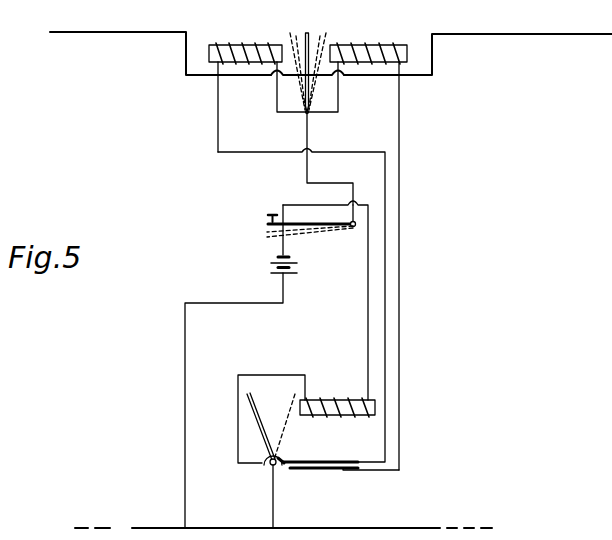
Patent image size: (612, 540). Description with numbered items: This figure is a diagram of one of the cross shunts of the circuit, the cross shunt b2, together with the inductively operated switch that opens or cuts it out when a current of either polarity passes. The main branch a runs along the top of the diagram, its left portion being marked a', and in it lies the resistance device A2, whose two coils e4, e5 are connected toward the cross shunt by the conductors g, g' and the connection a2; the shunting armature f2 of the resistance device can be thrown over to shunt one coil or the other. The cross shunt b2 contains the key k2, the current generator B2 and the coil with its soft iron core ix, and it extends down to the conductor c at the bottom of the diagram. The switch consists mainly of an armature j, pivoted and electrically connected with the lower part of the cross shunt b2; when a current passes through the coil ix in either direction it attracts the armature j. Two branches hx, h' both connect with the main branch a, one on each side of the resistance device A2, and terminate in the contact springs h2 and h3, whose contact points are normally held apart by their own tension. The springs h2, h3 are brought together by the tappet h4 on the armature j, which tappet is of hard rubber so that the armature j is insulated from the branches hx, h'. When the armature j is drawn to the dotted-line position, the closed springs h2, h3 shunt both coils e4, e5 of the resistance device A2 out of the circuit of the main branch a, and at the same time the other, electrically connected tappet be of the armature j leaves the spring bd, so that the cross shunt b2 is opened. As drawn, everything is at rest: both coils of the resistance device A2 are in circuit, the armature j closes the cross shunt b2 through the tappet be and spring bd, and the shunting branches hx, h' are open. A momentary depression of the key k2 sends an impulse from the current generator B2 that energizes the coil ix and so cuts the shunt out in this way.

The conductor (line wire) a' is at (160, 53).
The main branch a is at (441, 54).
The electromagnet coil e4 is at (228, 45).
The electromagnet coil e5 is at (366, 45).
The resistance device A2 is at (289, 59).
The shunting armature f2 is at (314, 44).
The connecting wire g is at (240, 107).
The connecting wire g' is at (377, 266).
The connecting conductor a2 is at (277, 107).
The cross shunt b2 is at (284, 507).
The shunting branch hx is at (406, 190).
The shunting branch h' is at (359, 324).
The key k2 is at (270, 221).
The current generator B2 is at (271, 265).
The spring bd is at (237, 463).
The coil and soft iron core ix is at (317, 403).
The armature j is at (259, 413).
The tappet be is at (265, 467).
The tappet h4 is at (286, 454).
The contact spring h2 is at (326, 448).
The contact spring h3 is at (352, 471).
The ground / return conductor c is at (283, 516).